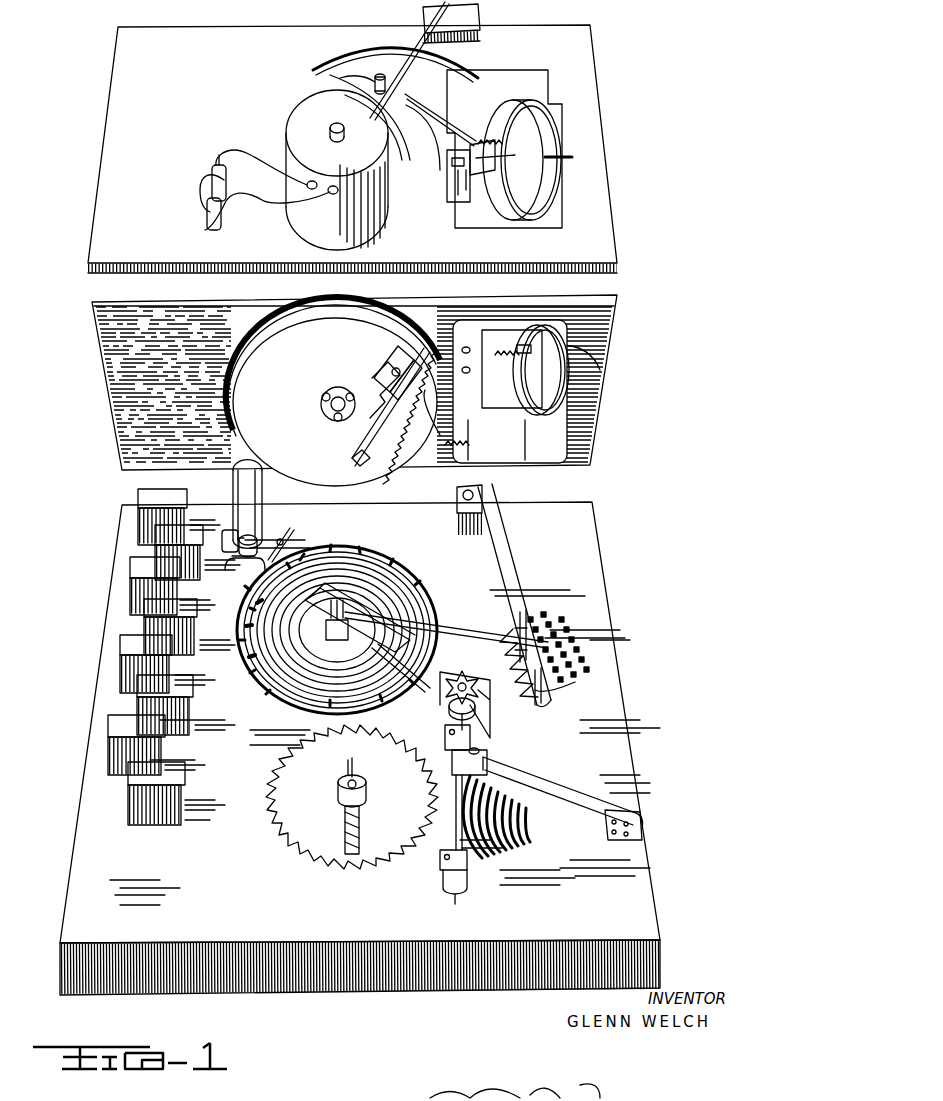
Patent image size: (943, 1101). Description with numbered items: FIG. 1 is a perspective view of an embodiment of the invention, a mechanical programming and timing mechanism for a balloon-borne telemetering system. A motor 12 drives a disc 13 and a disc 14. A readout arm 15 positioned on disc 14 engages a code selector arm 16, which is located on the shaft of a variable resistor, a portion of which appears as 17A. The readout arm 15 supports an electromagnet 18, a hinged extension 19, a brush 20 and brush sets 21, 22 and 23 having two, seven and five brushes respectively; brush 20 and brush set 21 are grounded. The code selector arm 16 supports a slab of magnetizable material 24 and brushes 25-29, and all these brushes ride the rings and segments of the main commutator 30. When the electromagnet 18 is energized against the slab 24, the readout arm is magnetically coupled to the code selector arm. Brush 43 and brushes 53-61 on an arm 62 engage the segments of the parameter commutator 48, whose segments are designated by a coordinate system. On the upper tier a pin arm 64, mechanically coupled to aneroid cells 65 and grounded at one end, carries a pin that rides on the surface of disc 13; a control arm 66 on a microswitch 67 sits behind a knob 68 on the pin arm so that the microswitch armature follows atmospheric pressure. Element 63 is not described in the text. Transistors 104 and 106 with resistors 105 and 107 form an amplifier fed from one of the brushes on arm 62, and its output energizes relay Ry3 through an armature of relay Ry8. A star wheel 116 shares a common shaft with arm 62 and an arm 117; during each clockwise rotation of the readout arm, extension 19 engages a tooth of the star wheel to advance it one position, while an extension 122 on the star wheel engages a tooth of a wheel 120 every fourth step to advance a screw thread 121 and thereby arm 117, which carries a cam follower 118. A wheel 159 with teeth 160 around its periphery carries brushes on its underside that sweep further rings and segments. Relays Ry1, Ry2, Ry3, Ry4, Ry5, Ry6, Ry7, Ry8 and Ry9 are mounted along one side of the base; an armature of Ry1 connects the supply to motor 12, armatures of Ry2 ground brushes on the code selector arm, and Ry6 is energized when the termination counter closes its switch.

The motor 12 is at (305, 105).
The disc 13 is at (348, 62).
The disc 14 is at (382, 470).
The readout arm 15 is at (370, 394).
The code selector arm 16 is at (355, 645).
The pointer arm 17A is at (300, 620).
The electromagnet 18 is at (395, 355).
The hinged extension 19 is at (438, 350).
The brush 20 is at (355, 458).
The brush set 21 is at (405, 395).
The brush set 22 is at (392, 409).
The brush set 23 is at (372, 438).
The slab of magnetizable material 24 is at (425, 610).
The brushes 25-29 is at (428, 626).
The main commutator 30 is at (400, 562).
The brush 43 is at (256, 664).
The parameter commutator 48 is at (540, 618).
The brushes 53-61 is at (502, 640).
The arm 62 is at (488, 552).
The link 63 is at (412, 180).
The pin arm 64 is at (432, 106).
The aneroid cells 65 is at (550, 125).
The control arm 66 is at (412, 42).
The microswitch 67 is at (482, 16).
The knob 68 is at (380, 76).
The transistor 104 is at (228, 530).
The resistor 105 is at (245, 570).
The transistor 106 is at (270, 545).
The resistor 107 is at (284, 541).
The star wheel 116 is at (455, 705).
The arm 117 is at (545, 772).
The cam follower 118 is at (565, 840).
The wheel 120 is at (470, 676).
The screw thread 121 is at (448, 832).
The extension 122 is at (446, 702).
The wheel 159 is at (280, 812).
The teeth 160 is at (310, 860).
The relay Ry1 is at (145, 772).
The relay Ry2 is at (125, 726).
The relay Ry3 is at (262, 492).
The relay Ry4 is at (152, 686).
The relay Ry5 is at (135, 646).
The relay Ry6 is at (165, 608).
The relay Ry7 is at (150, 568).
The relay Ry8 is at (168, 536).
The relay Ry9 is at (152, 498).